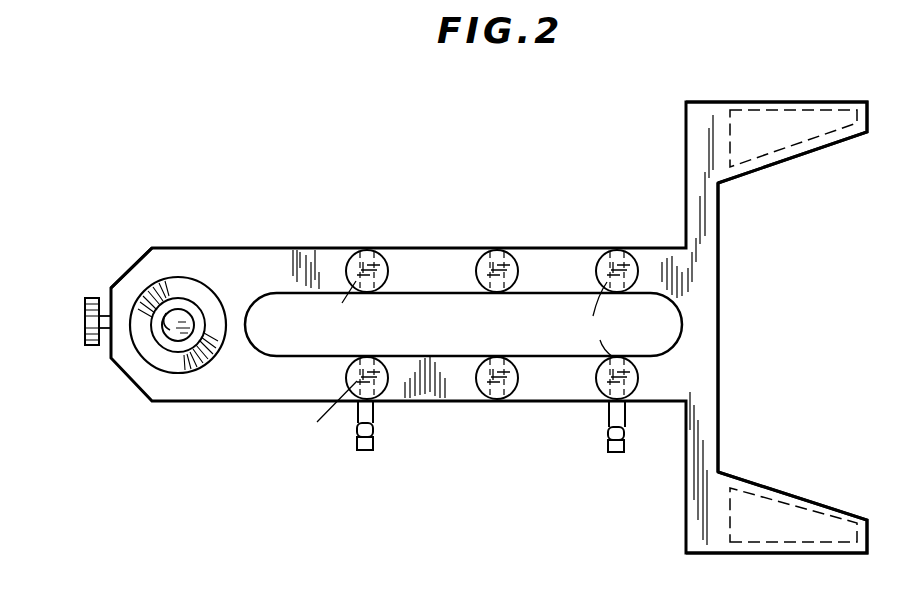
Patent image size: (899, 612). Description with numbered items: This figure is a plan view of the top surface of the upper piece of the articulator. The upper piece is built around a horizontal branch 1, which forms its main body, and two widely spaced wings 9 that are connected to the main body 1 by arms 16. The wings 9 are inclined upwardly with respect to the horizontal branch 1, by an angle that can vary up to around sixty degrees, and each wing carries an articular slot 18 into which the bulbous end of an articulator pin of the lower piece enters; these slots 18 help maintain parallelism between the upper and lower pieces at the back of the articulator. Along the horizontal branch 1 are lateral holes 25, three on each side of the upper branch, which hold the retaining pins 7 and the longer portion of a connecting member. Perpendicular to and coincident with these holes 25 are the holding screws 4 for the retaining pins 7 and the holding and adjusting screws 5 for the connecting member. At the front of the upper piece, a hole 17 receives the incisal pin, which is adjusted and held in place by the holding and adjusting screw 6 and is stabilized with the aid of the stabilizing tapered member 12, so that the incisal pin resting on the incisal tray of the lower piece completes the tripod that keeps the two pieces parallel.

The horizontal branch 1 is at (438, 262).
The holding screws 4 is at (454, 367).
The holding and adjusting screws 5 is at (505, 281).
The holding and adjusting screw 6 is at (84, 313).
The retaining pins 7 is at (374, 440).
The wings 9 is at (757, 92).
The stabilizing tapered member 12 is at (202, 295).
The arms 16 is at (714, 207).
The hole 17 is at (137, 282).
The slots 18 is at (778, 146).
The lateral holes 25 is at (368, 248).